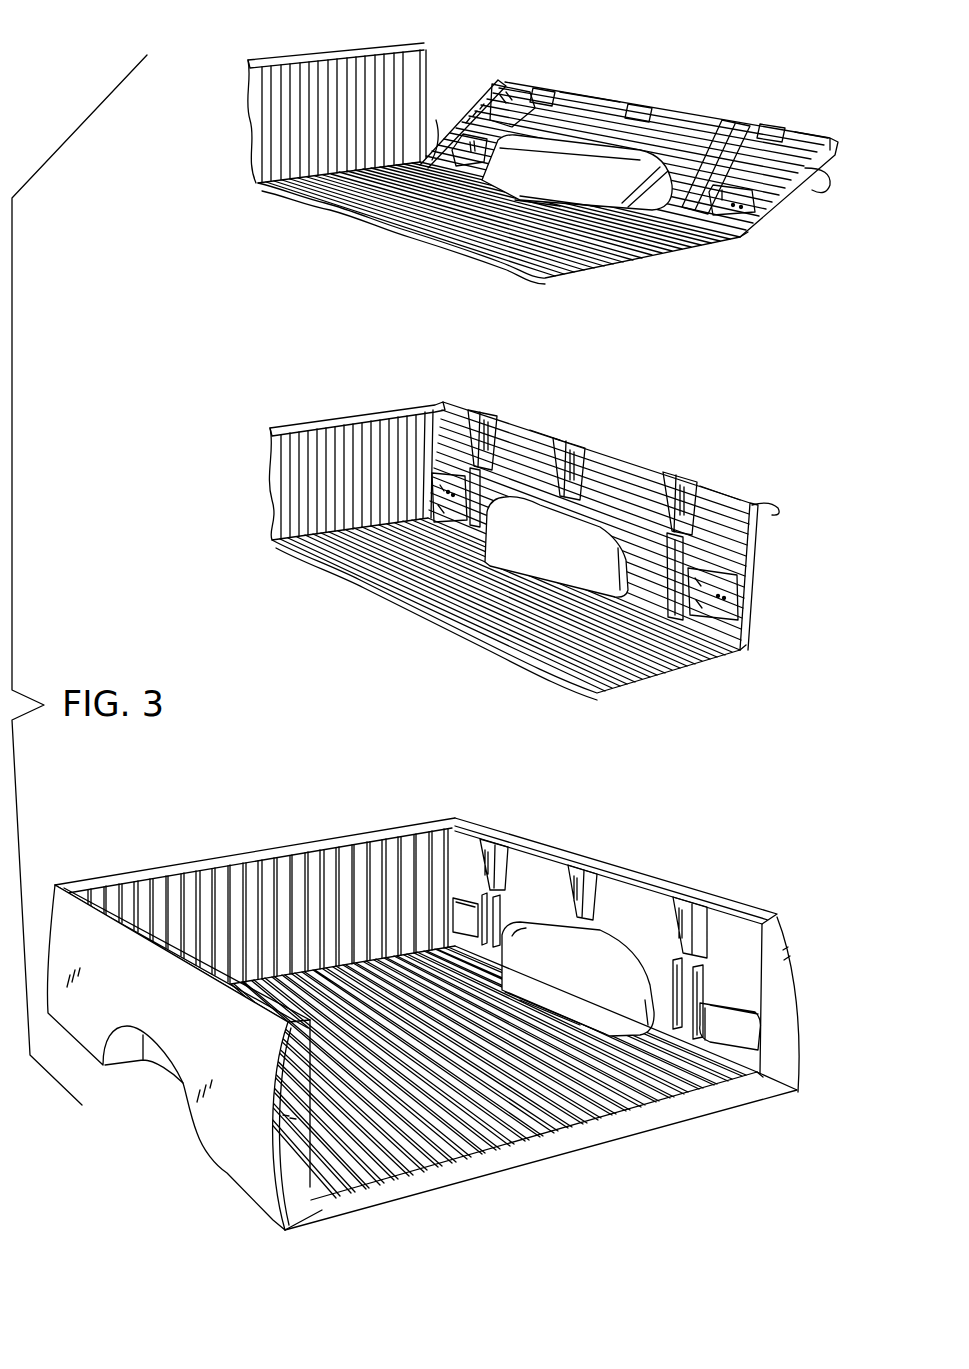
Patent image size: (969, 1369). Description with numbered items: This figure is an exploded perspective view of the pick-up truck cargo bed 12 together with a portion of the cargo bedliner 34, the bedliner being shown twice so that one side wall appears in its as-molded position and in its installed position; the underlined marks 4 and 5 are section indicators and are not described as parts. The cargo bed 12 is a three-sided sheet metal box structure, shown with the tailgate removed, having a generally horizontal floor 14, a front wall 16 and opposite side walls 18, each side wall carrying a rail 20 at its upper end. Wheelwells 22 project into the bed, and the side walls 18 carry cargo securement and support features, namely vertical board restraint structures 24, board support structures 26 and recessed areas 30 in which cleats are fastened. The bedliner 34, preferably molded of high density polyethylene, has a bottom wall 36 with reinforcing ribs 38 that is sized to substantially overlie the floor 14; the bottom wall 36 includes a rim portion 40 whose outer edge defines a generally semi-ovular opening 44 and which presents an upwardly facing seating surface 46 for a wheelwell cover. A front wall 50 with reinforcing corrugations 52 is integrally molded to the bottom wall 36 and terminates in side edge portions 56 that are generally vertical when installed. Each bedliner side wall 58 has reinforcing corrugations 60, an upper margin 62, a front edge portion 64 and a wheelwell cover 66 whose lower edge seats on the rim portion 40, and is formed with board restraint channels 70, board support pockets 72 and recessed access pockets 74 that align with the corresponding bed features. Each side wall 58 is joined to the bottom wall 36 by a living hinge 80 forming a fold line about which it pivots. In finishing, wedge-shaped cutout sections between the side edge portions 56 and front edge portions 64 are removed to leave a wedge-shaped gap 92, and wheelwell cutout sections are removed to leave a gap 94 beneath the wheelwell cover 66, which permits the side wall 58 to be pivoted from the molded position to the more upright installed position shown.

The section line 4 is at (778, 250).
The section line 5 is at (776, 563).
The cargo bed 12 is at (730, 868).
The floor 14 is at (619, 1112).
The front wall 16 is at (220, 855).
The side walls 18 is at (790, 985).
The rail 20 is at (575, 850).
The wheelwells 22 is at (600, 965).
The vertical board restraint structures 24 is at (500, 915).
The board support structures 26 is at (500, 848).
The recessed areas 30 is at (472, 910).
The cargo bedliner 34 is at (608, 58).
The bottom wall 36 is at (583, 270).
The reinforcing ribs 38 is at (470, 230).
The rim portions 40 is at (535, 192).
The semi-ovular opening 44 is at (570, 198).
The seating surface 46 is at (498, 558).
The front wall 50 is at (322, 55).
The reinforcing corrugations or ribs 52 is at (290, 108).
The side edge portions 56 is at (432, 58).
The side walls 58 is at (803, 150).
The reinforcing corrugations or ribs 60 is at (800, 178).
The upper margin 62 is at (676, 110).
The front edge portion 64 is at (470, 100).
The wheelwell cover 66 is at (522, 167).
The board restraint channels 70 is at (496, 105).
The board support pockets 72 is at (538, 97).
The recessed access pockets 74 is at (465, 150).
The hinge 80 is at (748, 240).
The wedge-shaped gaps 92 is at (440, 130).
The gaps 94 is at (593, 222).